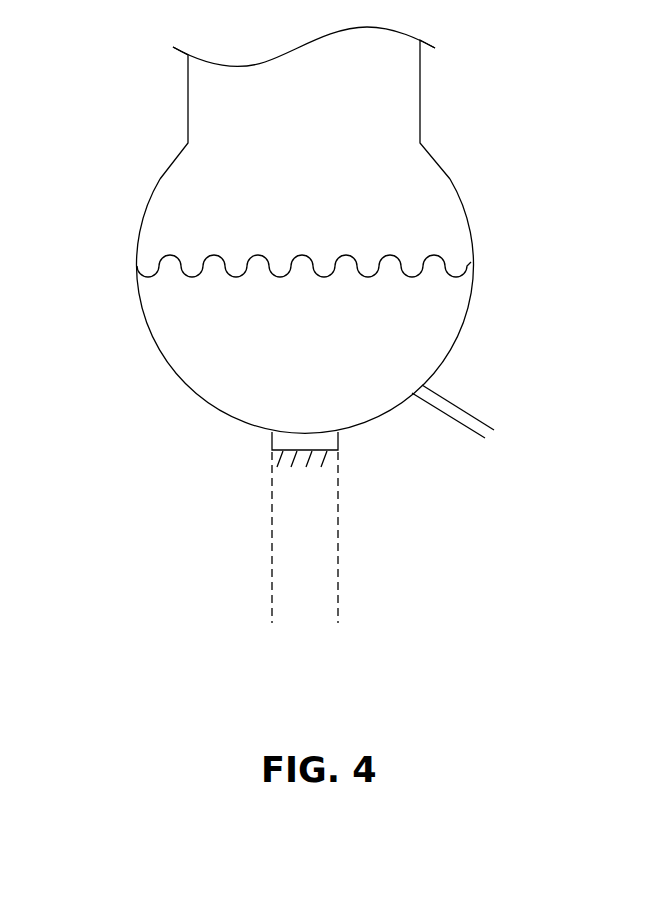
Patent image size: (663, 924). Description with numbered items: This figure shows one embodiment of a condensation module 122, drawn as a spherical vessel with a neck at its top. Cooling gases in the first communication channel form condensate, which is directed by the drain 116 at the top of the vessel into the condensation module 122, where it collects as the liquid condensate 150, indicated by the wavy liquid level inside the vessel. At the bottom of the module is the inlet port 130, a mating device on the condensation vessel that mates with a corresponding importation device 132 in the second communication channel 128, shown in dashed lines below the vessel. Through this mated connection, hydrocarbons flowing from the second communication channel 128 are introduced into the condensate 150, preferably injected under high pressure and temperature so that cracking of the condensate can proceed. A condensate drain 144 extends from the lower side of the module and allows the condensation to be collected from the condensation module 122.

The drain 116 is at (439, 88).
The condensation module 122 is at (138, 308).
The condensate 150 is at (328, 367).
The condensate drain 144 is at (465, 410).
The inlet port 130 is at (272, 442).
The importation device 132 is at (328, 457).
The second communication channel 128 is at (337, 535).